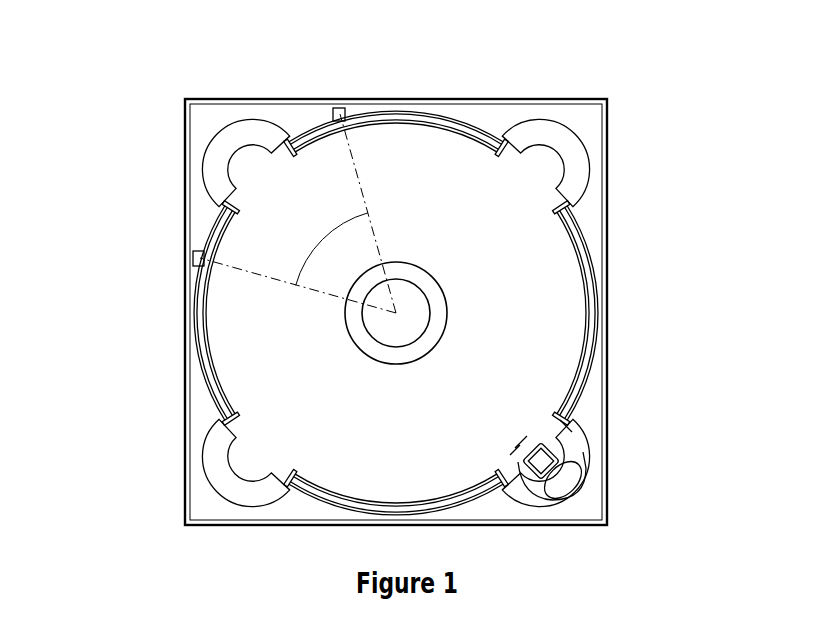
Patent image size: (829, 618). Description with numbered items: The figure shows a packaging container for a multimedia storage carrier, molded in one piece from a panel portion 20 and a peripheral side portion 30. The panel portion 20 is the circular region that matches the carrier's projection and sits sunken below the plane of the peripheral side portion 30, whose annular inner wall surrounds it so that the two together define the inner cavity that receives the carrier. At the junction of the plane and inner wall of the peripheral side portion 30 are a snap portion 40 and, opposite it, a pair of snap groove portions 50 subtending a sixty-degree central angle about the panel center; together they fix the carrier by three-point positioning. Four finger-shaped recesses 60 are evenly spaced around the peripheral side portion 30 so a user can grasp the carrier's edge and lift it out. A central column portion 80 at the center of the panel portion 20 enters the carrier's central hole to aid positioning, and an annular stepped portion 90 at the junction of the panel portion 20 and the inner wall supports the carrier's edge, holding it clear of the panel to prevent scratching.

The panel portion 20 is at (541, 283).
The peripheral side portion 30 is at (483, 117).
The snap portion 40 is at (537, 461).
The snap groove portions 50 is at (200, 258).
The finger-shaped recesses 60 is at (218, 162).
The central column portion 80 is at (390, 327).
The annular stepped portion 90 is at (583, 357).